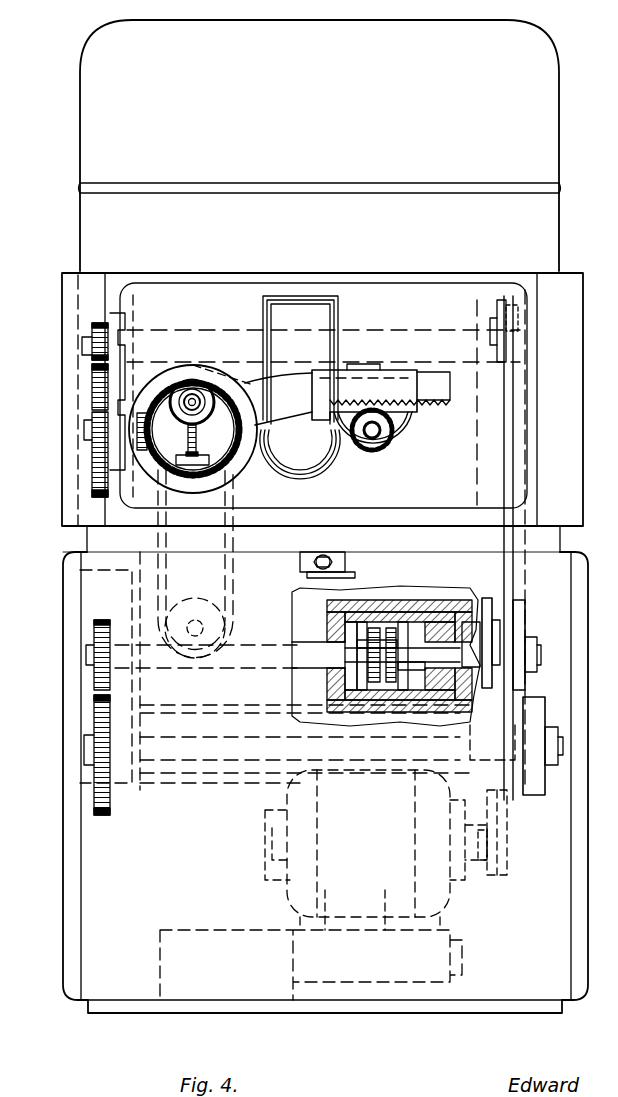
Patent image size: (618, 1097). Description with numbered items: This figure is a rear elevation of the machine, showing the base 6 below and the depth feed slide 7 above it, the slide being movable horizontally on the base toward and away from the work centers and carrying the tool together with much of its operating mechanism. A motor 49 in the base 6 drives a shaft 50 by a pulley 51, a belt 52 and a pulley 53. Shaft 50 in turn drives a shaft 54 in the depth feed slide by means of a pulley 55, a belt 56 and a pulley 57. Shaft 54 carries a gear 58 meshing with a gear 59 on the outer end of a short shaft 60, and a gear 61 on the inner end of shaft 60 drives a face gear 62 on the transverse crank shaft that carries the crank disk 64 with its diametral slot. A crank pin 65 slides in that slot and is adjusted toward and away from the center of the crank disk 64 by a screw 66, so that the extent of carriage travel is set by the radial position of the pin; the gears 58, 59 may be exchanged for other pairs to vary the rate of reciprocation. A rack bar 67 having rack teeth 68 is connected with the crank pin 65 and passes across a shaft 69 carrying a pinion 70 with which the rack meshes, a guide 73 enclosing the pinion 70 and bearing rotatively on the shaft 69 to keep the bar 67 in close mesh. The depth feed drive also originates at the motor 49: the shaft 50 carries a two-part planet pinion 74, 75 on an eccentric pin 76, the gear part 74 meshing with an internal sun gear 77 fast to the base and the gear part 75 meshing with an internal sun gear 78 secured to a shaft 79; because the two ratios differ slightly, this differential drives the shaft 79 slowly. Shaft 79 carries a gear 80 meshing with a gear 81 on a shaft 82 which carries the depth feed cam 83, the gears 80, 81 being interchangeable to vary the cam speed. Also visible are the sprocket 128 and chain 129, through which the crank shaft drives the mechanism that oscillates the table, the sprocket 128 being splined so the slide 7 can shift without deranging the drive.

The base 6 is at (97, 886).
The depth feed slide 7 is at (97, 516).
The motor 49 is at (290, 802).
The shaft 50 is at (440, 605).
The pulley 51 is at (508, 848).
The belt 52 is at (506, 808).
The pulley 53 is at (487, 600).
The shaft 54 is at (402, 330).
The pulley 55 is at (526, 632).
The belt 56 is at (516, 576).
The pulley 57 is at (500, 380).
The gear 58 is at (92, 326).
The gear 59 is at (92, 398).
The short shaft 60 is at (92, 436).
The gear 61 is at (170, 380).
The face gear 62 is at (195, 564).
The crank gear 64 is at (171, 381).
The crank pin 65 is at (196, 388).
The screw 66 is at (201, 445).
The rack bar 67 is at (298, 408).
The rack teeth 68 is at (435, 403).
The shaft 69 is at (374, 436).
The pinion 70 is at (406, 440).
The guide 73 is at (400, 380).
The planet pinion gear part 74 is at (405, 705).
The planet pinion gear part 75 is at (380, 705).
The eccentric pin 76 is at (395, 660).
The internal sun gear 77 is at (405, 615).
The internal sun gear 78 is at (385, 605).
The shaft 79 is at (300, 650).
The gear 80 is at (92, 628).
The gear 81 is at (92, 712).
The shaft 82 is at (216, 765).
The depth feed cam 83 is at (535, 700).
The sprocket 128 is at (197, 614).
The chain 129 is at (228, 490).